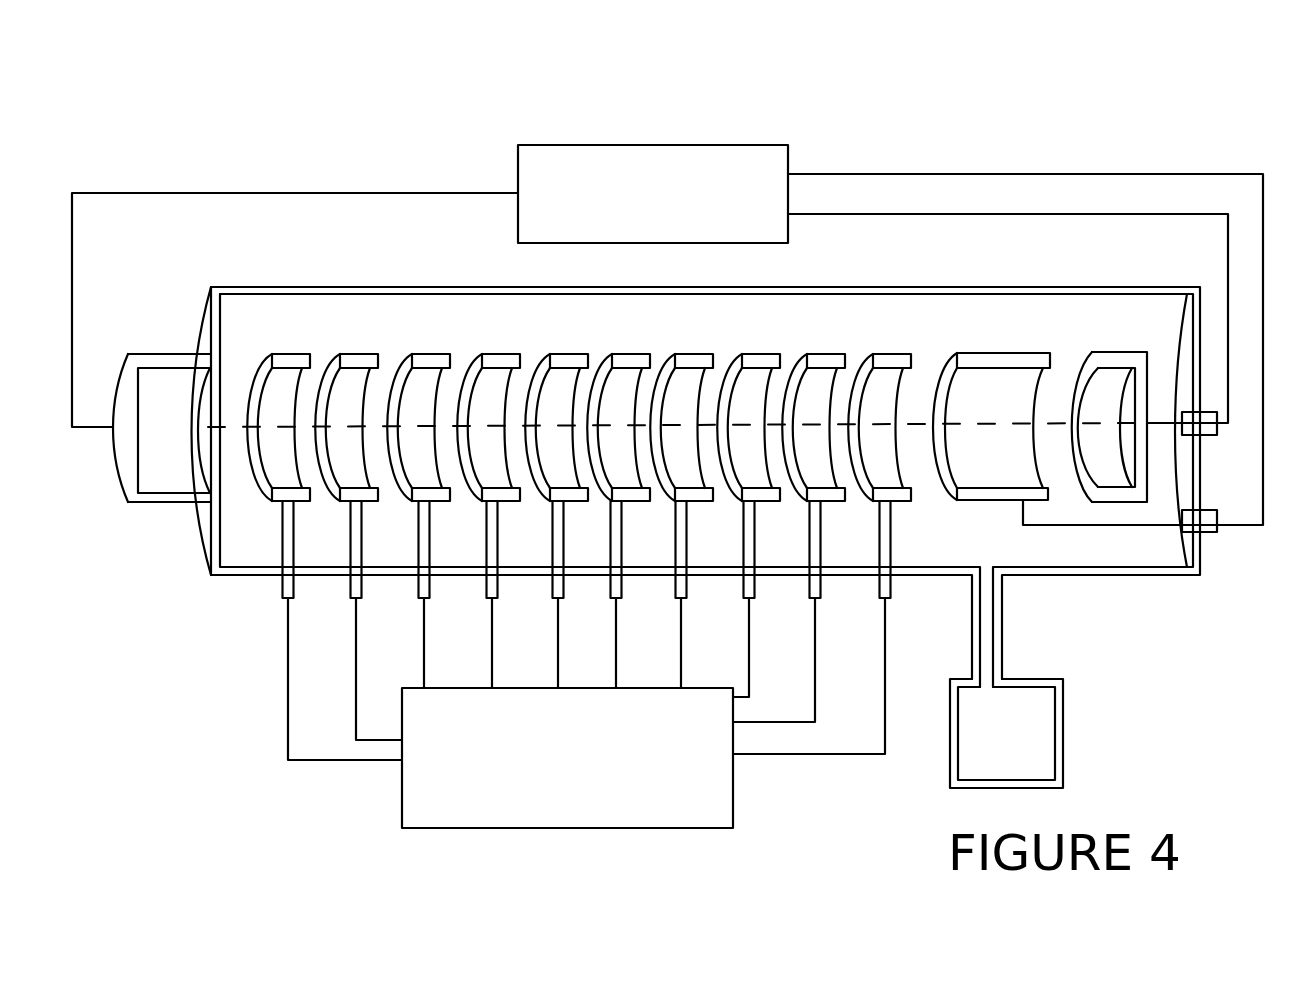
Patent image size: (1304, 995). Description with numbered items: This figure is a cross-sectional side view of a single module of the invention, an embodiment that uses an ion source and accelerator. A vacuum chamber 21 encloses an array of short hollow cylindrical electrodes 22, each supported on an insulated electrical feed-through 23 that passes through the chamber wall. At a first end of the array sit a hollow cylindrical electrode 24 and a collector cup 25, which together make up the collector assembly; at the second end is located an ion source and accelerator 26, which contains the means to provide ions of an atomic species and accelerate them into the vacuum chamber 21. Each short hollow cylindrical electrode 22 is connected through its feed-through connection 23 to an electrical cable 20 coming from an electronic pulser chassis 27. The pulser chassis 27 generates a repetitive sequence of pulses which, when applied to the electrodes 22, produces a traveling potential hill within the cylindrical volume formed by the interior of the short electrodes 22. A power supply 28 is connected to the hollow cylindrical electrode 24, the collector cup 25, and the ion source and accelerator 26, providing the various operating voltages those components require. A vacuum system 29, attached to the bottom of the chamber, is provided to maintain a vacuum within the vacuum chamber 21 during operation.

The electrical cable 20 is at (902, 873).
The vacuum chamber 21 is at (802, 287).
The short hollow cylindrical electrodes 22 is at (487, 352).
The insulated electrical feed-throughs 23 is at (923, 698).
The hollow cylindrical electrode 24 is at (970, 353).
The collector cup 25 is at (1100, 368).
The ion source and accelerator 26 is at (138, 503).
The electronic pulser chassis 27 is at (733, 808).
The power supply 28 is at (565, 145).
The vacuum system 29 is at (1063, 737).